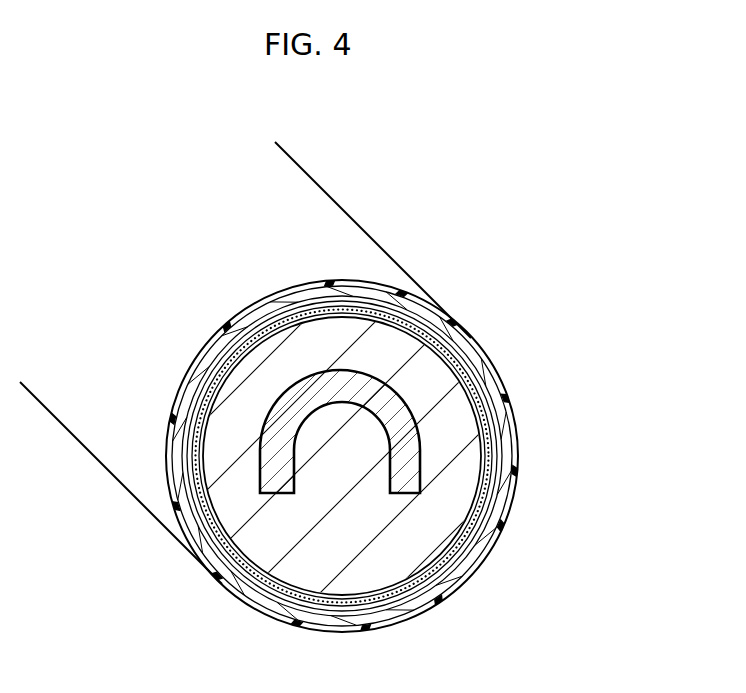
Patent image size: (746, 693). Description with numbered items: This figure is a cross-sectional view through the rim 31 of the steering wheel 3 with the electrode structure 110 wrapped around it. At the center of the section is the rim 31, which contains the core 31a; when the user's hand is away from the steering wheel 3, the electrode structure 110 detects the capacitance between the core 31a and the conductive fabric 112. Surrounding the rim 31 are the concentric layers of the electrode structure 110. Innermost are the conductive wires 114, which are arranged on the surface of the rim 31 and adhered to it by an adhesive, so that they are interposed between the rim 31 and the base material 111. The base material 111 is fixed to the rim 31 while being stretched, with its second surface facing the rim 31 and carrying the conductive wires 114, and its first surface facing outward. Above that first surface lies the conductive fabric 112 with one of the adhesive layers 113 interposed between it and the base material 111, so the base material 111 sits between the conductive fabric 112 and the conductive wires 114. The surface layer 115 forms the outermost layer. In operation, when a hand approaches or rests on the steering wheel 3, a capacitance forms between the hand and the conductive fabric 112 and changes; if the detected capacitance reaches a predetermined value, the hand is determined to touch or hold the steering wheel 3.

The steering wheel 3 is at (415, 252).
The electrode structure 110 is at (423, 455).
The base material 111 is at (508, 492).
The conductive fabric 112 is at (507, 428).
The adhesive layer 113 is at (497, 468).
The conductive wire 114 is at (492, 522).
The surface layer 115 is at (503, 382).
The rim 31 is at (243, 518).
The core 31a is at (299, 413).